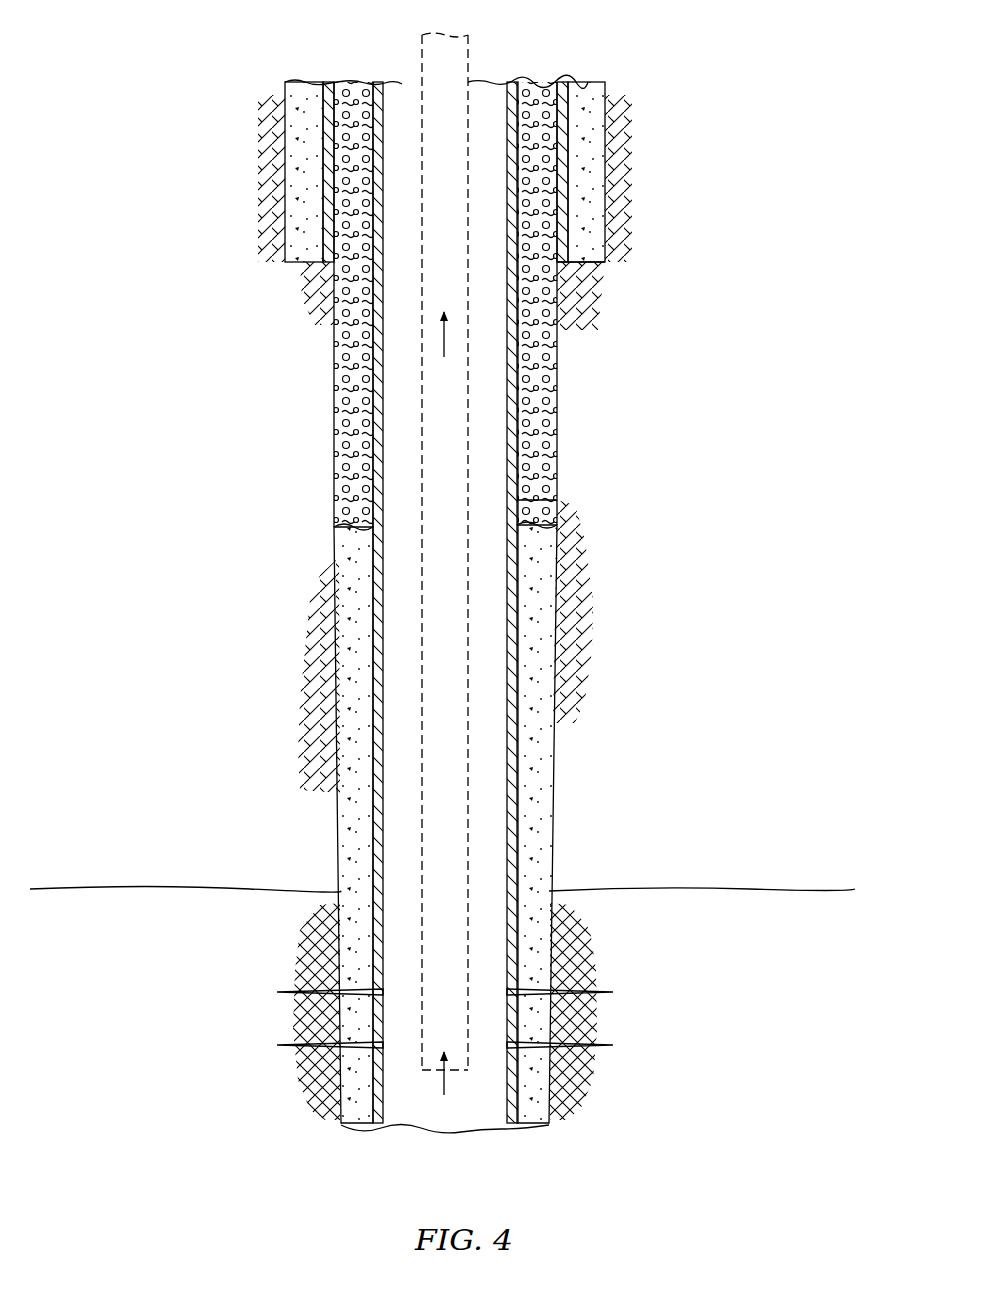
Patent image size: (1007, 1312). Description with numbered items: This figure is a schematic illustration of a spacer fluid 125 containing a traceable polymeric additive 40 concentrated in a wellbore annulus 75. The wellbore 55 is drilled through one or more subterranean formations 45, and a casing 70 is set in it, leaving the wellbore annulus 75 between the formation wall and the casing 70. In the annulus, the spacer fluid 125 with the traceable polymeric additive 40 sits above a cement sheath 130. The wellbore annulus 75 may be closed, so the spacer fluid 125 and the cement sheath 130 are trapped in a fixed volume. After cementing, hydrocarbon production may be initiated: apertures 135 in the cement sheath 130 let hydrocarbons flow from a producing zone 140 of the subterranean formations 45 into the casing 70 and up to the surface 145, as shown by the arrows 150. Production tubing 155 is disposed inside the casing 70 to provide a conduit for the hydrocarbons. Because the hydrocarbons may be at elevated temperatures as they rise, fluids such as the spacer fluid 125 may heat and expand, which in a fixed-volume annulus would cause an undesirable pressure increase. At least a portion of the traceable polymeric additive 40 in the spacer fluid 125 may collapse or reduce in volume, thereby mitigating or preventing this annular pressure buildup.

The traceable polymeric additive 40 is at (555, 368).
The subterranean formations 45 is at (321, 821).
The wellbore 55 is at (560, 567).
The casing 70 is at (555, 502).
The wellbore annulus 75 is at (555, 520).
The spacer fluid 125 is at (555, 315).
The cement sheath 130 is at (547, 775).
The apertures 135 is at (297, 1040).
The producing zone 140 is at (298, 973).
The surface 145 is at (485, 80).
The arrows 150 is at (444, 330).
The production tubing 155 is at (420, 62).